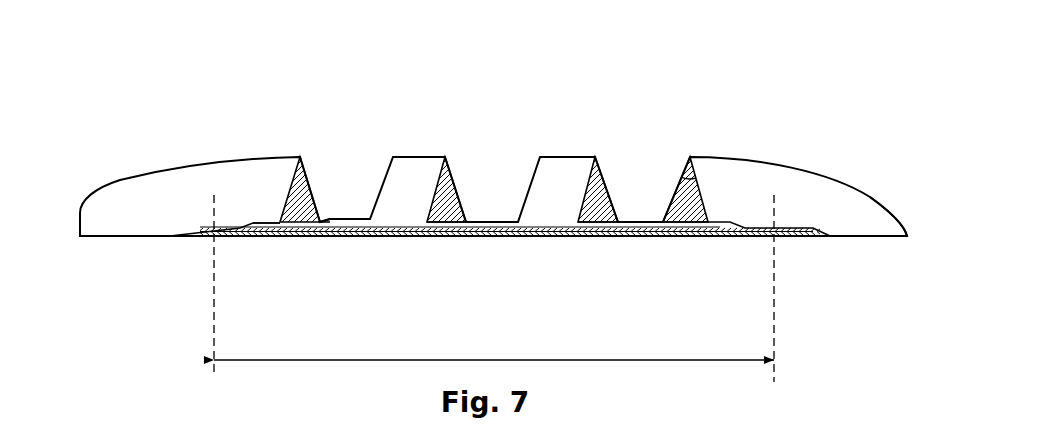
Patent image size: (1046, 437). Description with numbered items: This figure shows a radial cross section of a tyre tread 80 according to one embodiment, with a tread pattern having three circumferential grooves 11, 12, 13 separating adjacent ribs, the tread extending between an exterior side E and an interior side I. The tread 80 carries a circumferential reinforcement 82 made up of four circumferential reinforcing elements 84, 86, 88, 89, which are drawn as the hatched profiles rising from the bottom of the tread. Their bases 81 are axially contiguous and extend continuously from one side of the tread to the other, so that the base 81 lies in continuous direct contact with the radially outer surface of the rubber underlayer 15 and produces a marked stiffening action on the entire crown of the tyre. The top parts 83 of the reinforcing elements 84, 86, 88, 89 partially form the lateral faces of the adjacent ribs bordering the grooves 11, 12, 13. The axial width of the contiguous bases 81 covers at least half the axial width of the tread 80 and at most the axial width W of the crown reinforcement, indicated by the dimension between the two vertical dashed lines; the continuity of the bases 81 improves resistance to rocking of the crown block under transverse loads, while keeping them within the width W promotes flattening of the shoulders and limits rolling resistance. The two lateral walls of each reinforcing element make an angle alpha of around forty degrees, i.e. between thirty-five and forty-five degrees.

The tread 80 is at (297, 97).
The exterior side E is at (140, 153).
The interior side I is at (883, 160).
The first groove 11 is at (352, 187).
The second groove 12 is at (493, 190).
The third groove 13 is at (657, 188).
The rubber underlayer 15 is at (203, 236).
The bases 81 is at (292, 233).
The circumferential reinforcement 82 is at (423, 250).
The top parts 83 is at (597, 183).
The circumferential reinforcing element 84 is at (393, 233).
The circumferential reinforcing element 86 is at (293, 215).
The circumferential reinforcing element 88 is at (588, 207).
The circumferential reinforcing element 89 is at (690, 205).
The angle alpha is at (695, 170).
The axial width of the crown reinforcement W is at (494, 288).